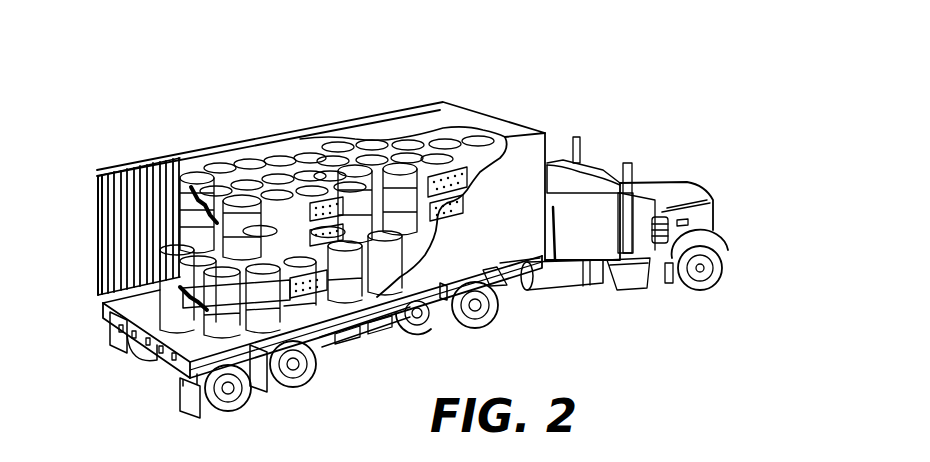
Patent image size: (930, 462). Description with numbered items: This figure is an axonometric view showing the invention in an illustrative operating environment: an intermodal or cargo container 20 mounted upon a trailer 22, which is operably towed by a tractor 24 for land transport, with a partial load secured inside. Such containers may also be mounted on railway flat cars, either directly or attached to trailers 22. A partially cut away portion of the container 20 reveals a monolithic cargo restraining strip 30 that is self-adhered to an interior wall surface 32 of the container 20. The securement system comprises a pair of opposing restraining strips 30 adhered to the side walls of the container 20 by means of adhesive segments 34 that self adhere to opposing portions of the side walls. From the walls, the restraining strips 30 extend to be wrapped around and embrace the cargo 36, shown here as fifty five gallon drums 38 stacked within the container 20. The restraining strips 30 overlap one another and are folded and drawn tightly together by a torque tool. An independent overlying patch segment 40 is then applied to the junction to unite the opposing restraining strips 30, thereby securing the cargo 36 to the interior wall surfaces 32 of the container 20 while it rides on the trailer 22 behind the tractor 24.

The cargo container 20 is at (483, 110).
The trailer 22 is at (107, 318).
The tractor 24 is at (727, 212).
The cargo restraining strip 30 is at (313, 360).
The interior wall surface 32 is at (168, 199).
The adhesive segments 34 is at (460, 186).
The cargo 36 is at (197, 331).
The fifty five gallon drums 38 is at (255, 163).
The overlying patch segment 40 is at (191, 187).